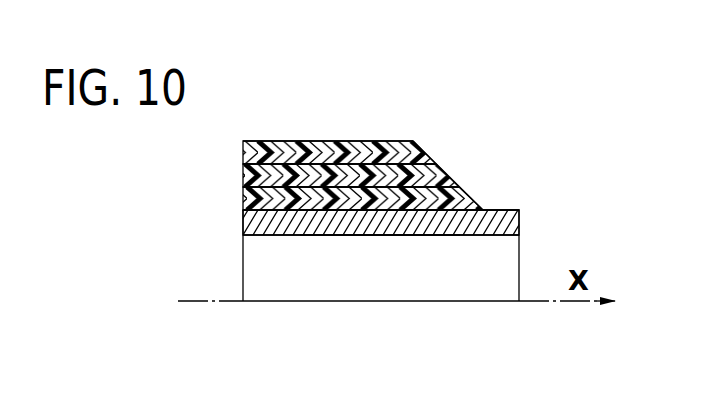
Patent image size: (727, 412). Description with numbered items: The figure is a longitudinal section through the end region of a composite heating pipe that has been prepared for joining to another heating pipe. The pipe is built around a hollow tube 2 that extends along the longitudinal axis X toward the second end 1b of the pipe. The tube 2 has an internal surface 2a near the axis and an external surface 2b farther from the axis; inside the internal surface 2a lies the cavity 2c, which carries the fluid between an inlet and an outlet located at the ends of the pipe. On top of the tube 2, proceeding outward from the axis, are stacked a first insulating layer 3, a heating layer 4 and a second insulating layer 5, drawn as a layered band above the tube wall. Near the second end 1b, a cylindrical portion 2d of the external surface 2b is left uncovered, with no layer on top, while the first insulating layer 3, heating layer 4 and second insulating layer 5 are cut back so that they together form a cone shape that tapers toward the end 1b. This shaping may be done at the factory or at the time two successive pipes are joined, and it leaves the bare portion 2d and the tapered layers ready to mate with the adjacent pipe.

The second end 1b is at (455, 170).
The hollow tube 2 is at (243, 227).
The internal surface 2a is at (368, 236).
The external surface 2b is at (345, 208).
The cavity 2c is at (318, 268).
The cylindrical portion 2d is at (497, 210).
The first insulating layer 3 is at (243, 205).
The heating layer 4 is at (243, 176).
The second insulating layer 5 is at (274, 148).